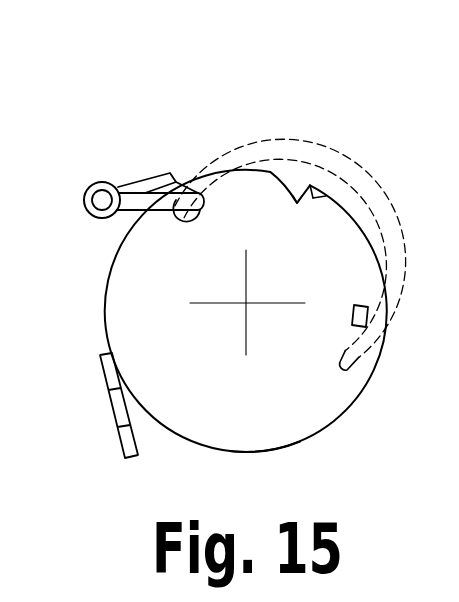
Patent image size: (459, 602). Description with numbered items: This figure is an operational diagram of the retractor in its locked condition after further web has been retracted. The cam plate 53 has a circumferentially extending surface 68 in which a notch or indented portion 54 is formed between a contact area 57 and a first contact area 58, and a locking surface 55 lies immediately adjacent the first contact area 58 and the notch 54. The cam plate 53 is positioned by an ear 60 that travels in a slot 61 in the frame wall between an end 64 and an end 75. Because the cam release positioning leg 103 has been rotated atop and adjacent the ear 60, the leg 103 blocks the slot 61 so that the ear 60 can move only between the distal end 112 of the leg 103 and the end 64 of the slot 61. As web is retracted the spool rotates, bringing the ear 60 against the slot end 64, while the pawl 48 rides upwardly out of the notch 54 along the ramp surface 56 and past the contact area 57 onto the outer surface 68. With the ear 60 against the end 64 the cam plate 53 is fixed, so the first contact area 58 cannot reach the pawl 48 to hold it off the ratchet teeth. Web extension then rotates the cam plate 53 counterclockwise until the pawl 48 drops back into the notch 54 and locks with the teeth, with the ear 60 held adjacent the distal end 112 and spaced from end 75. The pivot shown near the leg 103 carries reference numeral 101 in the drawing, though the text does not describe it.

The pawl 48 is at (110, 383).
The cam plate 53 is at (322, 421).
The notch 54 is at (290, 178).
The locking surface 55 is at (297, 202).
The ramp surface 56 is at (263, 183).
The contact area 57 is at (213, 174).
The first contact area 58 is at (311, 184).
The ear 60 is at (368, 312).
The slot 61 is at (338, 190).
The end 64 is at (349, 363).
The circumferentially extending surface 68 is at (297, 444).
The end 75 is at (175, 222).
The pivot pin 101 is at (88, 185).
The cam release positioning leg 103 is at (130, 210).
The distal end 112 is at (162, 176).